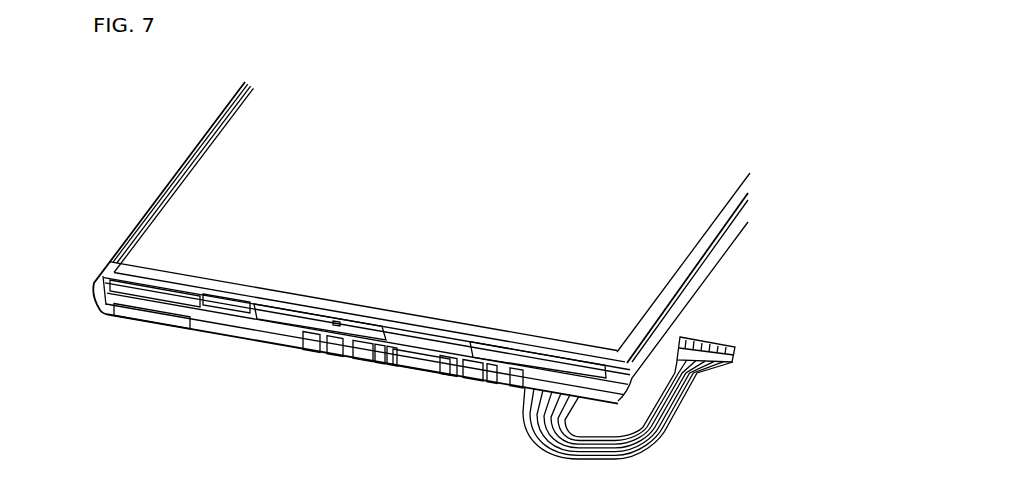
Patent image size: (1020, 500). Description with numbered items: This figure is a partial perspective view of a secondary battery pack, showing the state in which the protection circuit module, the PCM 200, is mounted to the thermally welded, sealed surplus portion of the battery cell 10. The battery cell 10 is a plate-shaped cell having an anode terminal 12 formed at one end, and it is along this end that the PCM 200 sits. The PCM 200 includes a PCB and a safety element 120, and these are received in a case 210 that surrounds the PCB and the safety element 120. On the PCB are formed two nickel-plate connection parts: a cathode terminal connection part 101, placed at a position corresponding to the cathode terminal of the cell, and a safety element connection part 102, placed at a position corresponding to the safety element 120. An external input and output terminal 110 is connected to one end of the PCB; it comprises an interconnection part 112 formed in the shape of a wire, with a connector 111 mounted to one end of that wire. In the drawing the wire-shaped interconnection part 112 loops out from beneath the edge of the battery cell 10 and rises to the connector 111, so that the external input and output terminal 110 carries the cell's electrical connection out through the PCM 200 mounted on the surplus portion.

The battery cell 10 is at (518, 190).
The anode terminal 12 is at (286, 320).
The cathode terminal connection part 101 is at (415, 365).
The safety element connection part 102 is at (142, 290).
The external input and output terminal 110 is at (826, 363).
The connector 111 is at (732, 362).
The interconnection part 112 is at (684, 407).
The safety element 120 is at (218, 300).
The PCM 200 is at (283, 368).
The case 210 is at (158, 325).